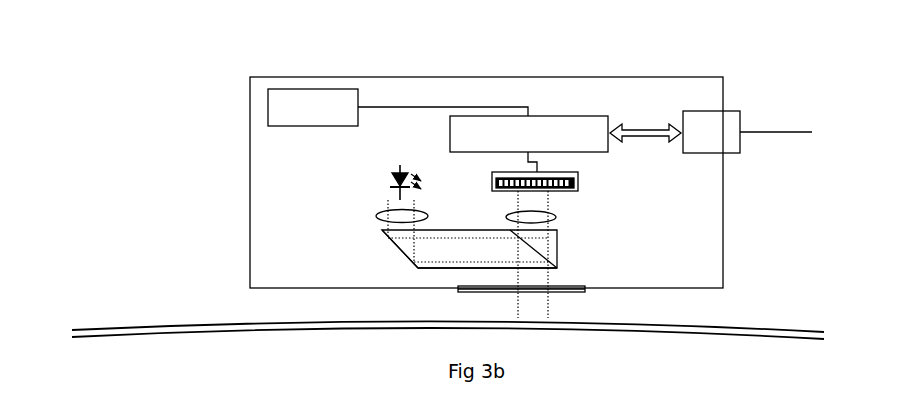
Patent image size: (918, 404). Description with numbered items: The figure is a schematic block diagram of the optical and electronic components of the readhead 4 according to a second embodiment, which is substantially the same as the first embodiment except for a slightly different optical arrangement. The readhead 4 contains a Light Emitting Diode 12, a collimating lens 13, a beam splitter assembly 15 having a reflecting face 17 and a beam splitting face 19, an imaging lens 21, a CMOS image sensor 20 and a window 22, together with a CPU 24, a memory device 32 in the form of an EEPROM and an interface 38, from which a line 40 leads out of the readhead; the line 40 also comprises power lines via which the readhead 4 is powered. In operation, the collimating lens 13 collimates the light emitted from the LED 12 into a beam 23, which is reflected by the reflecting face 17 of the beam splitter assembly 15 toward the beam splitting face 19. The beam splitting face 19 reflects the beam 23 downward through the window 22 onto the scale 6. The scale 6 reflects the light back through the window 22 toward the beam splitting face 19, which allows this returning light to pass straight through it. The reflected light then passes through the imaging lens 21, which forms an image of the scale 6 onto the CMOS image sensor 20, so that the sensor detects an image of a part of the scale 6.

The readhead 4 is at (243, 185).
The scale 6 is at (103, 320).
The Light Emitting Diode 12 is at (388, 180).
The collimating lens 13 is at (380, 213).
The beam splitter assembly 15 is at (565, 240).
The reflecting face 17 is at (400, 256).
The beam splitting face 19 is at (535, 252).
The CMOS image sensor 20 is at (588, 182).
The imaging lens 21 is at (556, 213).
The window 22 is at (472, 296).
The beam 23 is at (455, 267).
The CPU 24 is at (565, 144).
The memory device 32 is at (398, 107).
The interface 38 is at (711, 132).
The line 40 is at (785, 142).